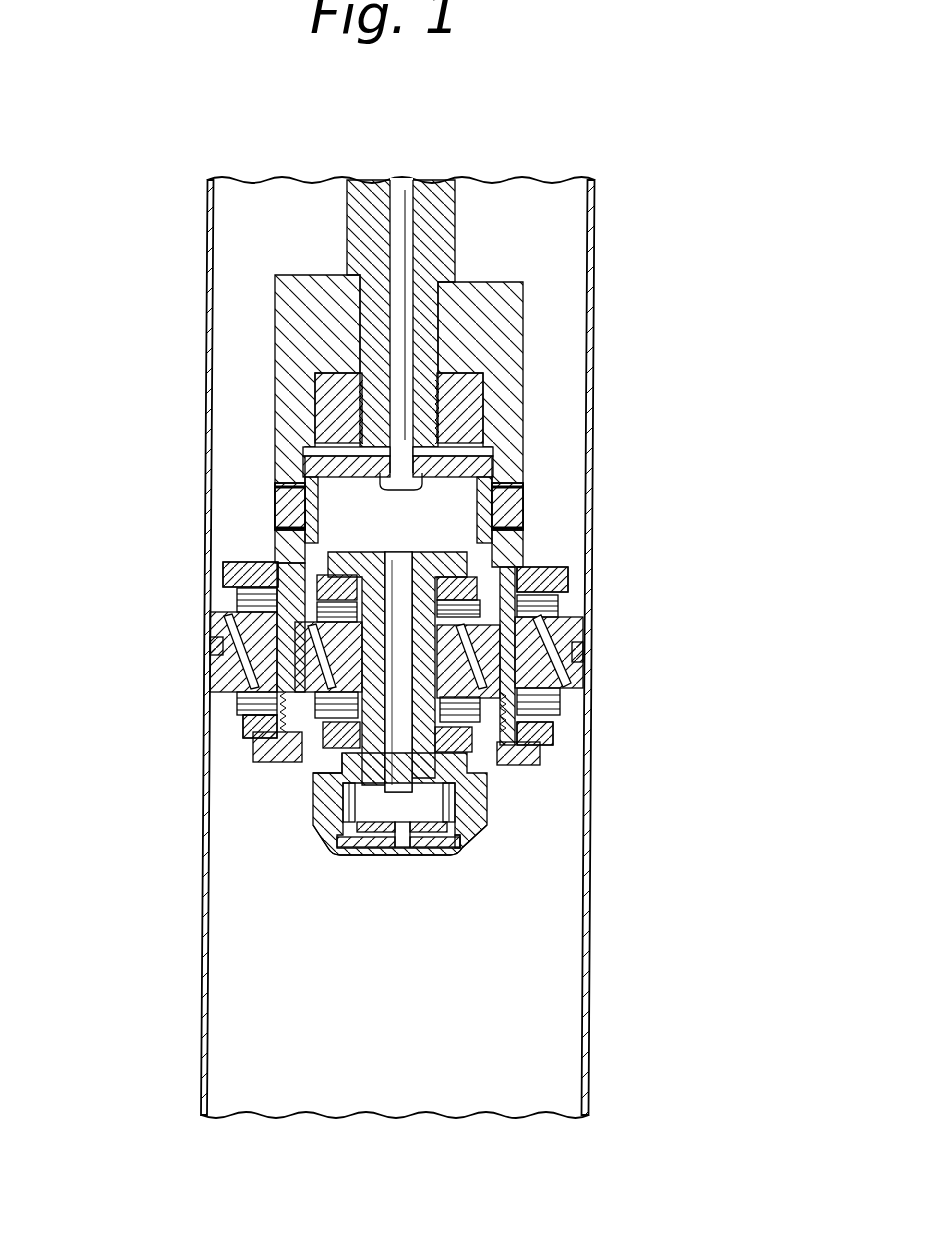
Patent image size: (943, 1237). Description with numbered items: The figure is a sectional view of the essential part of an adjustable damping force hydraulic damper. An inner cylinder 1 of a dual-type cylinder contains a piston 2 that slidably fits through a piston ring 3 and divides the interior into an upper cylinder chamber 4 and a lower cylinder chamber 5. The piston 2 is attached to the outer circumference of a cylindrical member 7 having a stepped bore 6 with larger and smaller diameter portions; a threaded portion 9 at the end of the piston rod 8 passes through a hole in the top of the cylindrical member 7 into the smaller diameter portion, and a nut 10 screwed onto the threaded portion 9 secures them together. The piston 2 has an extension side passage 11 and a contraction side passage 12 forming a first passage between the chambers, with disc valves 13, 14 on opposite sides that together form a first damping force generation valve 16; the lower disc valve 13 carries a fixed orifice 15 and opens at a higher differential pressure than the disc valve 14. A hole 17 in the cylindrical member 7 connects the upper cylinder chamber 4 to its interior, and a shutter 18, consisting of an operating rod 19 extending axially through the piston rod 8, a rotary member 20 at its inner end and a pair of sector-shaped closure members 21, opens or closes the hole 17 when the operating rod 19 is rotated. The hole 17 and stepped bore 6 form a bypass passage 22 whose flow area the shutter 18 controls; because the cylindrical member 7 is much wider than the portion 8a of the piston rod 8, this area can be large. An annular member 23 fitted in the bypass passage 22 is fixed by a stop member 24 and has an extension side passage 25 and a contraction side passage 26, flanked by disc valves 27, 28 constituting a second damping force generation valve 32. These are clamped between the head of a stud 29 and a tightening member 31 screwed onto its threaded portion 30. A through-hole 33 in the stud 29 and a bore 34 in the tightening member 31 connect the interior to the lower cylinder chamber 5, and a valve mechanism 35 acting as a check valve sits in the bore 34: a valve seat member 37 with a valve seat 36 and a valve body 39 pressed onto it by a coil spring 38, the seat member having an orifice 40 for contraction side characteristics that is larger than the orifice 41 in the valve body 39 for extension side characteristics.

The inner cylinder 1 is at (594, 267).
The piston 2 is at (583, 632).
The piston ring 3 is at (580, 655).
The upper cylinder chamber 4 is at (576, 219).
The lower cylinder chamber 5 is at (528, 1047).
The stepped bore 6 is at (540, 550).
The cylindrical member 7 is at (517, 431).
The piston rod 8 is at (447, 213).
The portion of the piston rod 8a is at (430, 313).
The threaded portion 9 is at (490, 372).
The nut 10 is at (480, 392).
The extension side passage 11 is at (246, 700).
The contraction side passage 12 is at (580, 685).
The disc valve 13 is at (560, 712).
The disc valve 14 is at (560, 600).
The fixed orifice 15 is at (250, 728).
The first damping force generation valve 16 is at (723, 613).
The hole 17 is at (523, 497).
The shutter 18 is at (300, 452).
The operating rod 19 is at (397, 228).
The rotary member 20 is at (305, 462).
The sector-shaped closure members 21 is at (305, 508).
The bypass passage 22 is at (645, 442).
The annular member 23 is at (292, 645).
The stop member 24 is at (265, 765).
The extension side passage 25 is at (236, 655).
The contraction side passage 26 is at (545, 750).
The disc valve 27 is at (245, 745).
The disc valve 28 is at (272, 603).
The stud 29 is at (305, 770).
The threaded portion 30 is at (335, 790).
The tightening member 31 is at (330, 838).
The second damping force generation valve 32 is at (68, 580).
The through-hole 33 is at (487, 788).
The bore 34 is at (487, 825).
The valve mechanism 35 is at (362, 857).
The valve seat 36 is at (420, 858).
The valve seat member 37 is at (457, 857).
The coil spring 38 is at (483, 832).
The valve body 39 is at (460, 855).
The orifice 40 is at (392, 857).
The orifice 41 is at (403, 862).